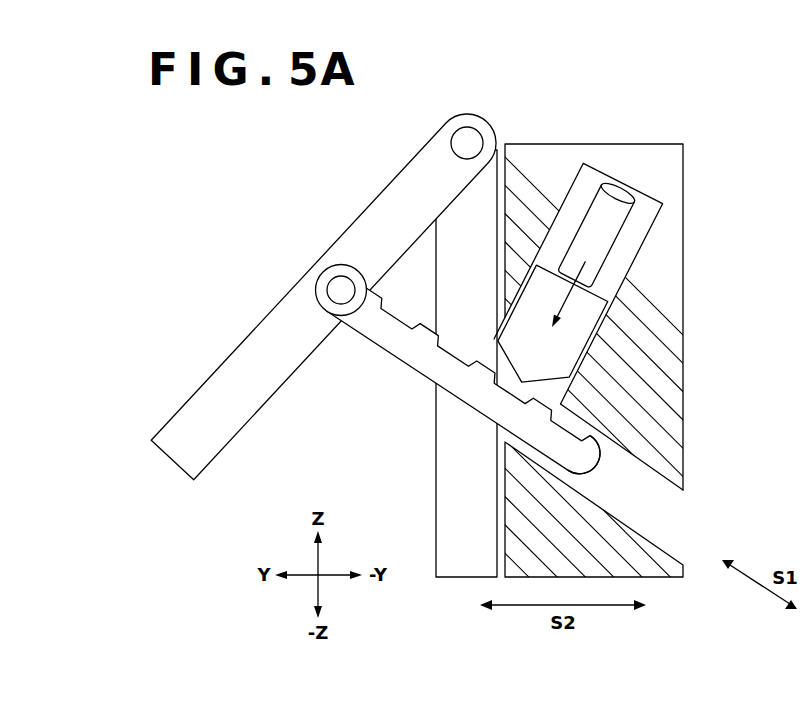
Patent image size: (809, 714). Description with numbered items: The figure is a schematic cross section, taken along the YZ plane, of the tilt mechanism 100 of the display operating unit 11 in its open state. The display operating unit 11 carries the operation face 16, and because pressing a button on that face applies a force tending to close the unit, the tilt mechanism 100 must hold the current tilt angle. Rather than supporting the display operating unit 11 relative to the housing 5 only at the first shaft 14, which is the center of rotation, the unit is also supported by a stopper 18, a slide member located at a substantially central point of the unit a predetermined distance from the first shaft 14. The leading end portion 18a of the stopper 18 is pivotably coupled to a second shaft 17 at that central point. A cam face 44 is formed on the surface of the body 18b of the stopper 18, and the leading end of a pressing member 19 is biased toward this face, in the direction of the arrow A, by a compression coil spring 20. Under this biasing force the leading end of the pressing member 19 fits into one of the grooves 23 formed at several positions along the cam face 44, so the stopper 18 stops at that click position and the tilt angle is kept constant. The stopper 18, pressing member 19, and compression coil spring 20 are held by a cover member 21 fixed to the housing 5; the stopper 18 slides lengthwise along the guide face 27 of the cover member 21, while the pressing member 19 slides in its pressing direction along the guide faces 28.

The tilt mechanism 100 is at (684, 100).
The housing 5 is at (436, 523).
The display operating unit 11 is at (329, 291).
The first shaft 14 is at (466, 143).
The operation face 16 is at (235, 347).
The second shaft 17 is at (341, 289).
The stopper 18 is at (536, 373).
The leading end portion 18a is at (352, 313).
The body 18b is at (437, 365).
The pressing member 19 is at (585, 347).
The compression coil spring 20 is at (610, 252).
The cover member 21 is at (374, 357).
The groove 23 is at (580, 424).
The guide face 27 is at (656, 546).
The guide face 28 is at (651, 232).
The cam face 44 is at (600, 442).
The arrow A is at (575, 343).